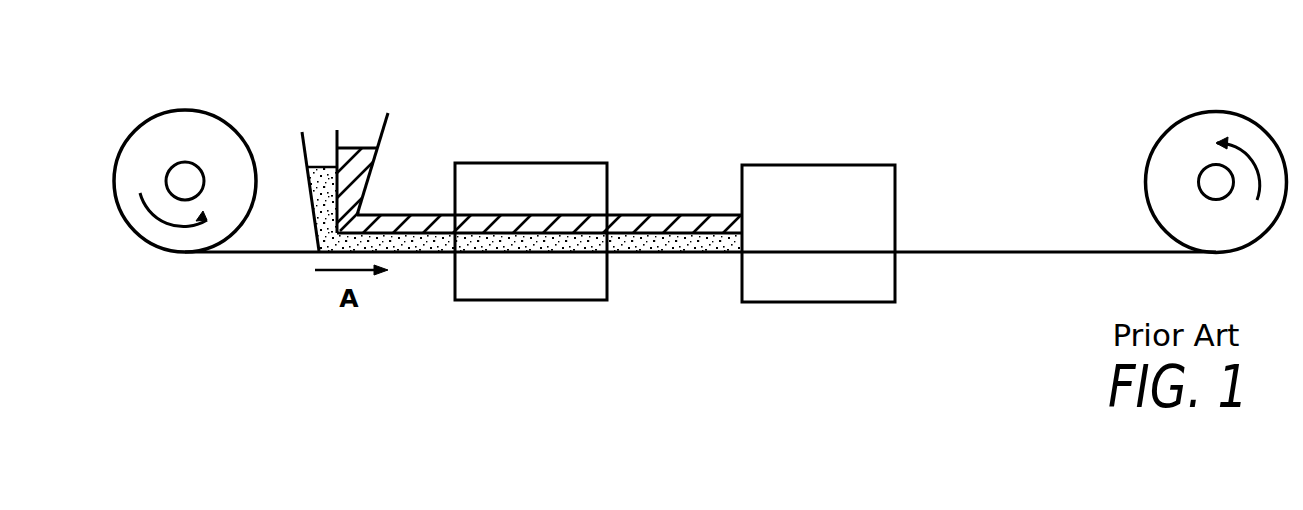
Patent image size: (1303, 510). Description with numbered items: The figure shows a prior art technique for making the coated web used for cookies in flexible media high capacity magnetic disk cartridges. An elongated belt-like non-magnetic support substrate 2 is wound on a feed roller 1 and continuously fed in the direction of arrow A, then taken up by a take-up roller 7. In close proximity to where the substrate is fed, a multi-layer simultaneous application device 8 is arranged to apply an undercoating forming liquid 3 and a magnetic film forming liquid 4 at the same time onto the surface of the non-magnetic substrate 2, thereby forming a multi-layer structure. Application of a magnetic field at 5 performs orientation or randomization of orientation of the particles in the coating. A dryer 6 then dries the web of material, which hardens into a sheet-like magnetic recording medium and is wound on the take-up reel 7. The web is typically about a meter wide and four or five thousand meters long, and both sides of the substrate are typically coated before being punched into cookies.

The feed roller 1 is at (188, 112).
The non-magnetic support substrate 2 is at (237, 253).
The undercoating forming liquid 3 is at (320, 162).
The magnetic film forming liquid 4 is at (347, 152).
The magnetic field application 5 is at (531, 302).
The dryer 6 is at (807, 201).
The take-up roller 7 is at (1217, 112).
The multi-layer simultaneous application device 8 is at (317, 233).